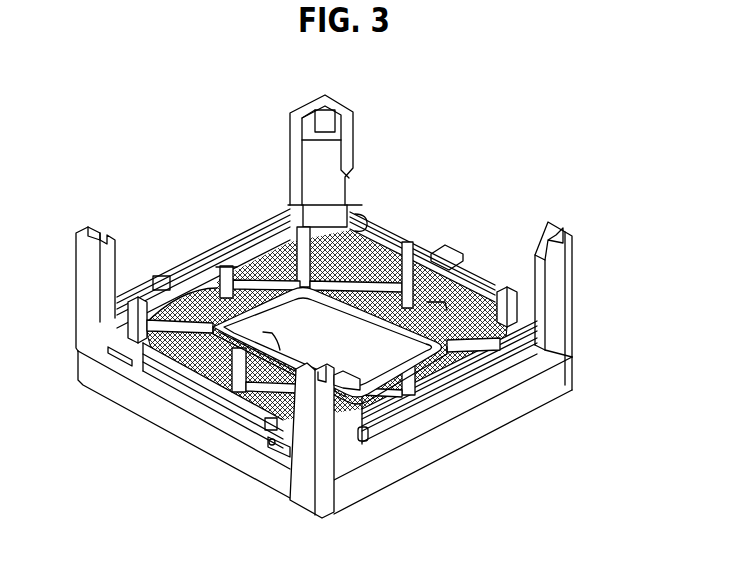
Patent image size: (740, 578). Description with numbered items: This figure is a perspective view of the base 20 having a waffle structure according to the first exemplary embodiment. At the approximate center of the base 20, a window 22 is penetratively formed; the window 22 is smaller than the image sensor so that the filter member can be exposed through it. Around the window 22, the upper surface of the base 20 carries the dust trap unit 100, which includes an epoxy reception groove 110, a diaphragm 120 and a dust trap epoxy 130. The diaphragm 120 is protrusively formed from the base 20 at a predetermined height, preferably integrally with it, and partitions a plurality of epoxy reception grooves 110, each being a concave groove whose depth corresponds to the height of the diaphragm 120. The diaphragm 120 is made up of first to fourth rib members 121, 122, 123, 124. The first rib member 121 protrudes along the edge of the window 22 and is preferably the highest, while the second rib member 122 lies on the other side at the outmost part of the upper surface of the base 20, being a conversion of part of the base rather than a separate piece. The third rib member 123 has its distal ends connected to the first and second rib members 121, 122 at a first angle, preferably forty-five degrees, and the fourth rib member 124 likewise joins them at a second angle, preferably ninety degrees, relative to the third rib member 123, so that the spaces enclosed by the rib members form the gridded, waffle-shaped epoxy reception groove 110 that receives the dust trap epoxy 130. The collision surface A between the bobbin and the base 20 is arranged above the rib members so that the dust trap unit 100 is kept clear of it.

The dust trap unit 100 is at (535, 457).
The diaphragm 120 is at (327, 310).
The first rib member 121 is at (256, 241).
The second rib member 122 is at (274, 224).
The third rib member 123 is at (234, 262).
The fourth rib member 124 is at (203, 284).
The dust trap epoxy 130 is at (362, 213).
The epoxy reception groove 110 is at (458, 255).
The base 20 is at (418, 393).
The window 22 is at (254, 340).
The collision surface A is at (415, 316).